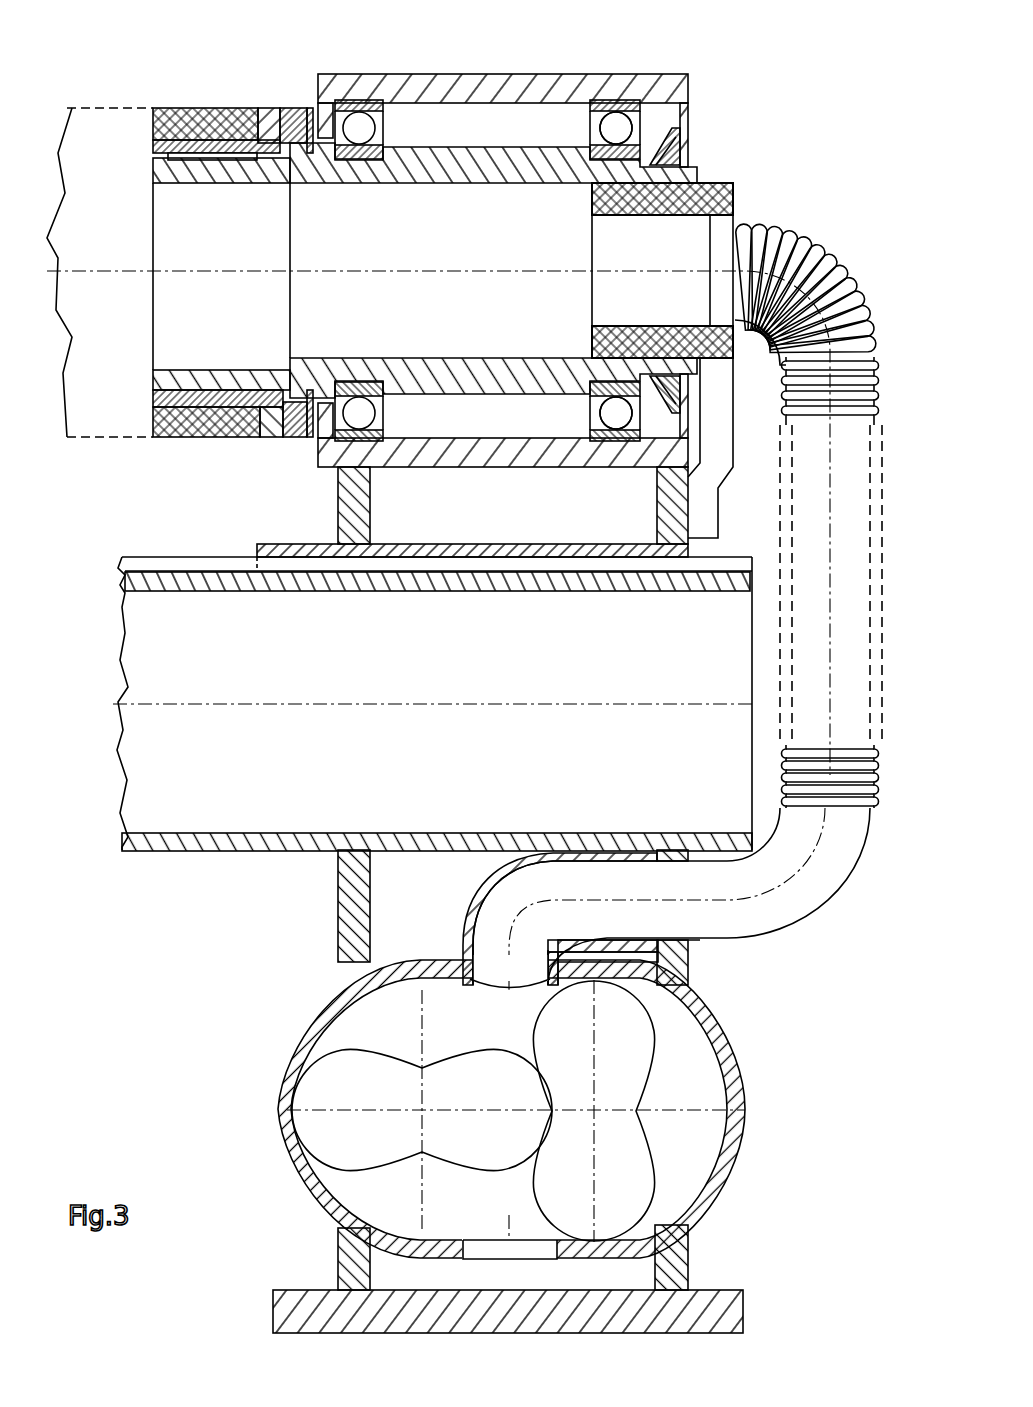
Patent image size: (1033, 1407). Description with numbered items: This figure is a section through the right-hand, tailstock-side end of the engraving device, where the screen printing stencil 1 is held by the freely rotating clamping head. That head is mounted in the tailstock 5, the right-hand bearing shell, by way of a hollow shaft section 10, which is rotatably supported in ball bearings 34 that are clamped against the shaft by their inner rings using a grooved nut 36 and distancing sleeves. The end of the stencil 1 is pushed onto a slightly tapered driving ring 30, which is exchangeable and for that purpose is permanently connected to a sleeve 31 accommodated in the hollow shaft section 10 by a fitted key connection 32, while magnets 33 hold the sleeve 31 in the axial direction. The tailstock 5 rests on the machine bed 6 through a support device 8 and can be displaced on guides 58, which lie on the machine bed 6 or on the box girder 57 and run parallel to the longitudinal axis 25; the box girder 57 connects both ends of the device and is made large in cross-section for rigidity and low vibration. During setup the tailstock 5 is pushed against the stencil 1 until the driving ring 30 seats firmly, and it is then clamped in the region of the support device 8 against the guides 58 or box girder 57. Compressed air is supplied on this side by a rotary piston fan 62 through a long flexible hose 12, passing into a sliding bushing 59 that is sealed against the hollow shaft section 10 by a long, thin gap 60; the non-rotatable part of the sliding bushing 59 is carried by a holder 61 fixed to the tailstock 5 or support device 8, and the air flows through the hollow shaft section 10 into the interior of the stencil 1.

The screen printing stencil 1 is at (110, 108).
The tailstock 5 is at (442, 85).
The machine bed 6 is at (364, 790).
The support device 8 is at (350, 512).
The hollow shaft section 10 is at (311, 143).
The flow duct 12 is at (830, 255).
The longitudinal axis 25 is at (105, 273).
The driving ring 30 is at (198, 108).
The sleeve 31 is at (262, 108).
The fitted key connection 32 is at (158, 108).
The magnets 33 is at (288, 108).
The ball bearings 34 is at (360, 123).
The grooved nut 36 is at (670, 127).
The box girder 57 is at (158, 852).
The guides 58 is at (233, 568).
The sliding bushing 59 is at (722, 182).
The gap 60 is at (622, 127).
The holder 61 is at (720, 462).
The rotary piston fan 62 is at (700, 1135).